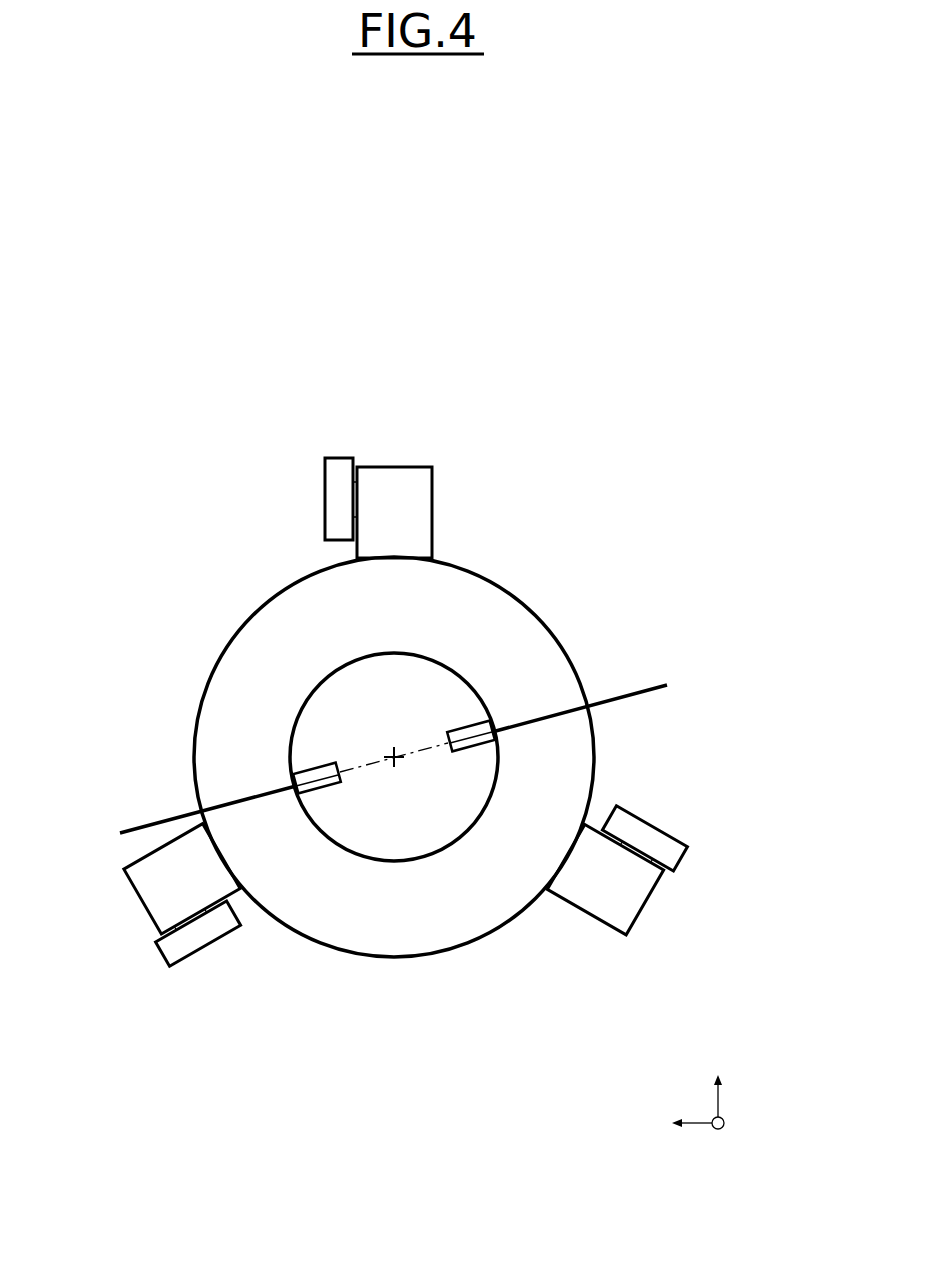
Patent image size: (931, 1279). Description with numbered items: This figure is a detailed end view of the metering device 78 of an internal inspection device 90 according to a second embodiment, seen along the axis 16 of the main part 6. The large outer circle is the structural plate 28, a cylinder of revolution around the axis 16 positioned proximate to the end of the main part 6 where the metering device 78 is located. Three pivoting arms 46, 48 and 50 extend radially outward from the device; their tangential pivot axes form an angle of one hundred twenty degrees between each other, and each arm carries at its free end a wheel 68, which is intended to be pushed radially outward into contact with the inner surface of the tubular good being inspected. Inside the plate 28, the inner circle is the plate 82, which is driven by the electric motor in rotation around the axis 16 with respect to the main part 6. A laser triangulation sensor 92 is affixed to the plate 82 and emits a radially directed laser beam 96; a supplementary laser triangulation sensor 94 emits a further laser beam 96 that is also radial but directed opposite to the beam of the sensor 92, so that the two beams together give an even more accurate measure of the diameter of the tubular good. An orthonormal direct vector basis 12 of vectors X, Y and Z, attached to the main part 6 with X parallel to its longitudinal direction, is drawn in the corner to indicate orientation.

The main part 6 is at (546, 609).
The orthonormal direct vector basis 12 is at (748, 1058).
The axis 16 is at (396, 762).
The structural plate 28 is at (552, 795).
The pivoting arm 46 is at (432, 518).
The pivoting arm 48 is at (138, 905).
The pivoting arm 50 is at (583, 913).
The wheel 68 is at (325, 500).
The metering device 78 is at (288, 712).
The plate 82 is at (360, 700).
The internal inspection device 90 is at (152, 580).
The laser triangulation sensor 92 is at (305, 776).
The supplementary laser triangulation sensor 94 is at (475, 727).
The laser beam 96 is at (160, 822).